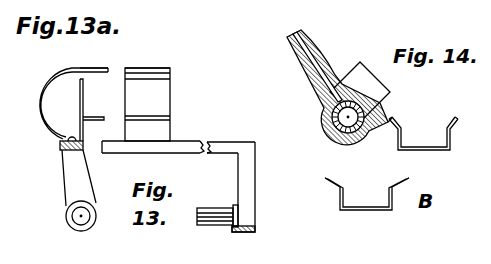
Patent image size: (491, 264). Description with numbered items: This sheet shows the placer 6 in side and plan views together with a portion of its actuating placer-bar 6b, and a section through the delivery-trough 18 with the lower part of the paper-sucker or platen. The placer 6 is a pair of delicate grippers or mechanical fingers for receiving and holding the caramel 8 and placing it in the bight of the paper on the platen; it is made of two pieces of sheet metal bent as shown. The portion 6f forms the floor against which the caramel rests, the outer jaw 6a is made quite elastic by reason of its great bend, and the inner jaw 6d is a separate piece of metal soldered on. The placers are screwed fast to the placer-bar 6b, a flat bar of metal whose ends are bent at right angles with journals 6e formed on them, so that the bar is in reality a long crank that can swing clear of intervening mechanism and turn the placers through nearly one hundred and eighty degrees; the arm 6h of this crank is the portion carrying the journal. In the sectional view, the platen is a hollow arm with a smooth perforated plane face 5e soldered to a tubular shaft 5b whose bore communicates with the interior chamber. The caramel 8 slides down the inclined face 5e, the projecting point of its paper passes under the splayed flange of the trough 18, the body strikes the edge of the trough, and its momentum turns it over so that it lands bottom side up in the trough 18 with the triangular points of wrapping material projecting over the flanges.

In FIG. 13A, the placer 6 is at (62, 103).
In FIG. 13A, the outer jaw 6a is at (100, 68).
In FIG. 13, the outer jaw 6a is at (142, 68).
In FIG. 13A, the floor 6f is at (80, 101).
In FIG. 13, the floor 6f is at (147, 104).
In FIG. 13A, the inner jaw 6d is at (100, 117).
In FIG. 13, the inner jaw 6d is at (170, 118).
In FIG. 13A, the placer-bar 6b is at (62, 146).
In FIG. 13, the placer-bar 6b is at (216, 147).
In FIG. 13A, the arm 6h is at (70, 178).
In FIG. 13, the arm 6h is at (250, 181).
In FIG. 13A, the journals 6e is at (78, 216).
In FIG. 13, the journals 6e is at (216, 210).
In FIG. 14, the plane face 5e is at (307, 48).
In FIG. 14, the tubular shaft 5b is at (332, 117).
In FIG. 14, the caramel 8 is at (360, 92).
In FIG. 14, the delivery-trough 18 is at (325, 202).